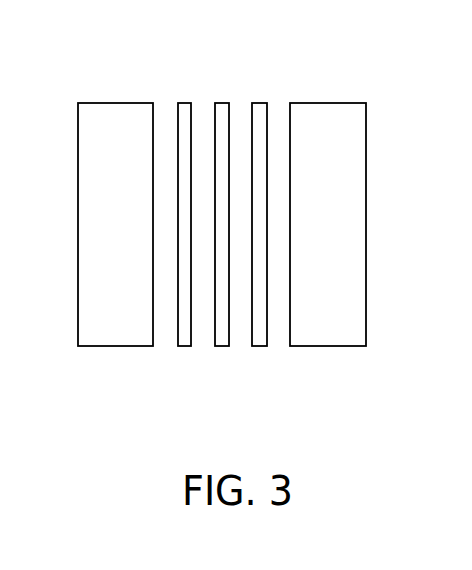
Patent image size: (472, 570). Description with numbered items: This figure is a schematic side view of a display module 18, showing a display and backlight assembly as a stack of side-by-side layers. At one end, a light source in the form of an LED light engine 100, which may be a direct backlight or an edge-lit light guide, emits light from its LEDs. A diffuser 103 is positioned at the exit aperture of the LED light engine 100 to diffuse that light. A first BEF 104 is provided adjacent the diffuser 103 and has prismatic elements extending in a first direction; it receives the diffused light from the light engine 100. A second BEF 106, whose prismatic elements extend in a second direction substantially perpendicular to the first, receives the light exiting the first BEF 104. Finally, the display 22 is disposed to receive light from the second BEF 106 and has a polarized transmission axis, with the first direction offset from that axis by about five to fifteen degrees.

The display module 18 is at (333, 29).
The display 22 is at (341, 102).
The LED light engine 100 is at (116, 102).
The diffuser 103 is at (185, 347).
The first BEF 104 is at (220, 101).
The second BEF 106 is at (258, 347).